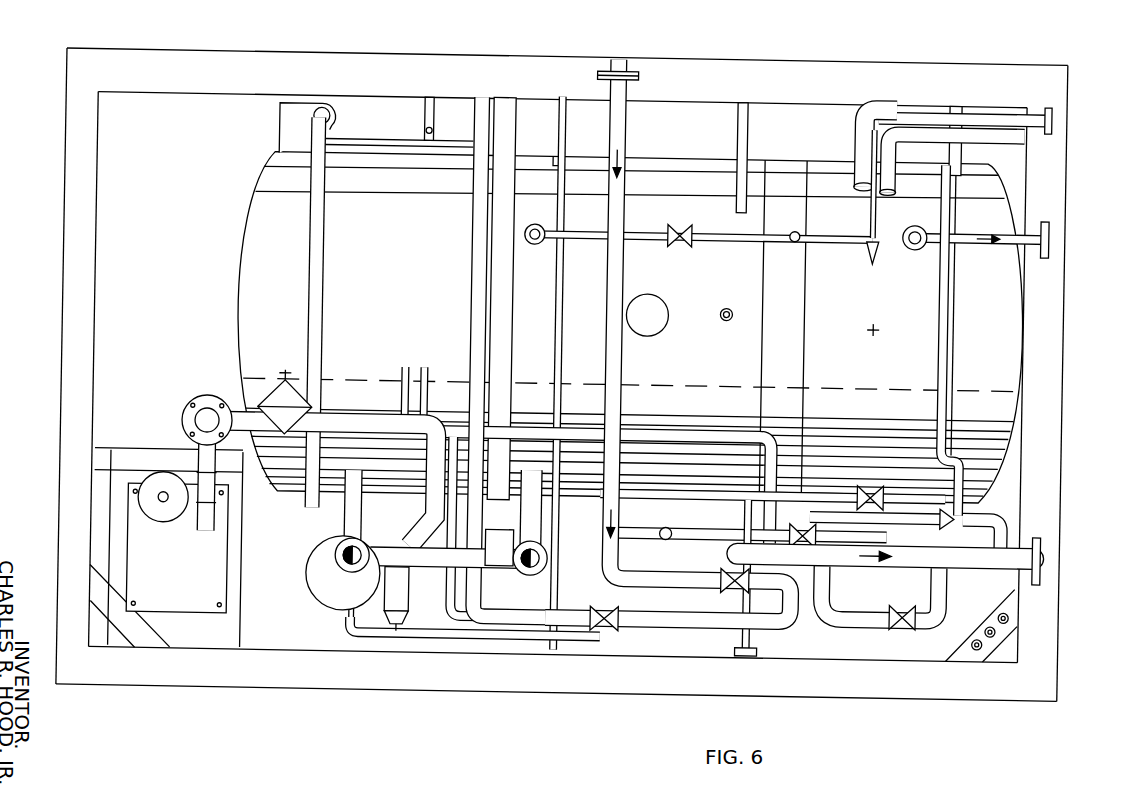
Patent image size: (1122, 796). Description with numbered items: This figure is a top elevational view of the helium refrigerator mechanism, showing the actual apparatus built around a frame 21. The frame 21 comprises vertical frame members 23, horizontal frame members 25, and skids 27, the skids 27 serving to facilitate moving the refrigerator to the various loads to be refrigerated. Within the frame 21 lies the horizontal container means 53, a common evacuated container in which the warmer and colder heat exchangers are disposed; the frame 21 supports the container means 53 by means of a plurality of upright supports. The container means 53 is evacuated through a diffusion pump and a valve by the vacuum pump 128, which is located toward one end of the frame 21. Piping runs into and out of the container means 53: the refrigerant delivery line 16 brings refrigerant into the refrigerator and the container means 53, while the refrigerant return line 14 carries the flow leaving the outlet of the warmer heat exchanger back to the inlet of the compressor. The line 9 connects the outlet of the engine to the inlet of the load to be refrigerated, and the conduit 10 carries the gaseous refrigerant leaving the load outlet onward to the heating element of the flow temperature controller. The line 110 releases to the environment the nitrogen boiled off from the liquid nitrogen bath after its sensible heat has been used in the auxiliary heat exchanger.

The line 9 is at (344, 560).
The conduit 10 is at (534, 565).
The refrigerant return line 14 is at (992, 549).
The refrigerant delivery line 16 is at (628, 142).
The frame 21 is at (1075, 142).
The vertical frame members 23 is at (77, 428).
The horizontal frame members 25 is at (676, 59).
The skids 27 is at (466, 676).
The container means 53 is at (263, 336).
The line 110 is at (1006, 229).
The vacuum pump 128 is at (136, 534).